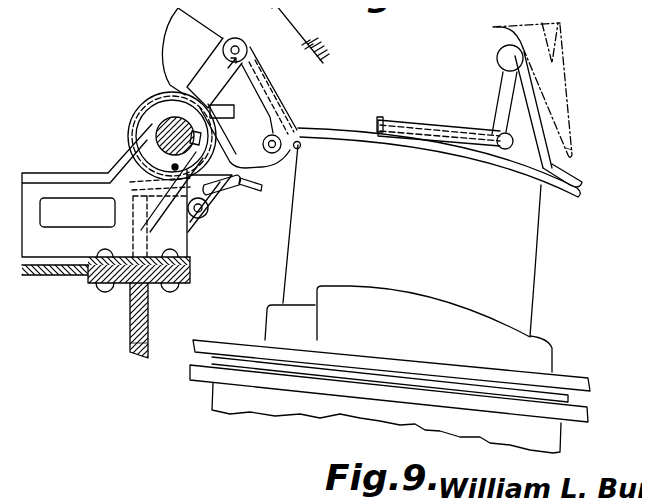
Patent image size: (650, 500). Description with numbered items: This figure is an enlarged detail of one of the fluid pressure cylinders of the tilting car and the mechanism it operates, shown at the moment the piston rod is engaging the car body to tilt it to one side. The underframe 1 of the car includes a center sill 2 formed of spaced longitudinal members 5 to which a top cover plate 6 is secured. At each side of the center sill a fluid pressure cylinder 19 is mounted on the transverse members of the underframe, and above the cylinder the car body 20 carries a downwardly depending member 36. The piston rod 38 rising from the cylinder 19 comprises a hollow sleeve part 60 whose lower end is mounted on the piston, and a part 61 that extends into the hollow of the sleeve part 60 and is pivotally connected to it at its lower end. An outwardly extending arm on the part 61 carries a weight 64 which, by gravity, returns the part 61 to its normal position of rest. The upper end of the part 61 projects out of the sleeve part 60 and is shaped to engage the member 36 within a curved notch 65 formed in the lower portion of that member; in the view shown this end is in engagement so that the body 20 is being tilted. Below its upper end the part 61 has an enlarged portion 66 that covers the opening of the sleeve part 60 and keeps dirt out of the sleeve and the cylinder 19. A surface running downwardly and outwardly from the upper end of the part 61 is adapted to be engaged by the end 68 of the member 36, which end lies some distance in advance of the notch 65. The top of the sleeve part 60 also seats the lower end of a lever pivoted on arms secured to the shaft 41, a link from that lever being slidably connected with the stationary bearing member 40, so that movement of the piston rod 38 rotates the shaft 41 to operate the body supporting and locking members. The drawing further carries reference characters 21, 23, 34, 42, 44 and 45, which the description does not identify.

The underframe 1 is at (130, 318).
The center sill 2 is at (103, 290).
The longitudinal members 5 is at (132, 343).
The top cover plate 6 is at (50, 275).
The fluid pressure cylinder 19 is at (543, 438).
The car body 20 is at (300, 140).
The rod 21 is at (262, 80).
The tab 23 is at (255, 181).
The ball pivot 34 is at (500, 60).
The downwardly depending member 36 is at (548, 78).
The piston rod 38 is at (513, 222).
The bearing member 40 is at (62, 193).
The shaft 41 is at (172, 130).
The bell crank arm 42 is at (247, 50).
The fan plate 44 is at (182, 43).
The rod 45 is at (447, 137).
The hollow sleeve part 60 is at (510, 262).
The pivoted part 61 is at (503, 148).
The weight 64 is at (538, 120).
The curved notch 65 is at (523, 50).
The enlarged portion 66 is at (408, 128).
The end of depending member 68 is at (570, 143).